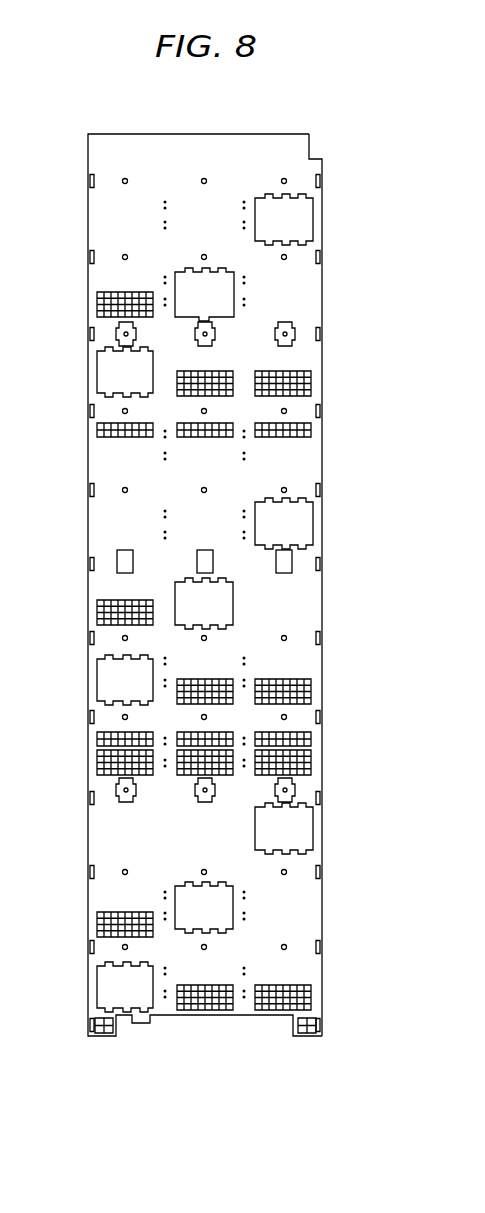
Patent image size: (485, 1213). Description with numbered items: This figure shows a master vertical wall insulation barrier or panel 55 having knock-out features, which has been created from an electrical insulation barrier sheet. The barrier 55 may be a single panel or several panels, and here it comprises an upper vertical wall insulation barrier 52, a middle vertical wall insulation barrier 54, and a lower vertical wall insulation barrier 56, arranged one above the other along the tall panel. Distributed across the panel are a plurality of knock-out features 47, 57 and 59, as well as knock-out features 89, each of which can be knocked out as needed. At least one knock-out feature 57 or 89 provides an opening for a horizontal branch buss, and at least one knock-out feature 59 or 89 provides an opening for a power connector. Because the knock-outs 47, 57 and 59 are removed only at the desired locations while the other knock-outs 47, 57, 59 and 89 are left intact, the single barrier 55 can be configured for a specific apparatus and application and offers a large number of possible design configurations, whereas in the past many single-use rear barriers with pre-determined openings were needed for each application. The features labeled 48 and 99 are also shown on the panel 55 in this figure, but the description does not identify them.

The master vertical wall insulation barrier 55 is at (318, 165).
The knock-out feature 59 is at (292, 211).
The upper vertical wall insulation barrier 52 is at (315, 290).
The knock-out feature 57 is at (295, 333).
The middle vertical wall insulation barrier 54 is at (315, 465).
The knock-out feature 47 is at (293, 561).
The lower vertical wall insulation barrier 56 is at (315, 902).
The mounting hole 48 is at (286, 948).
The knock-out feature 89 is at (102, 366).
The small component 99 is at (120, 557).